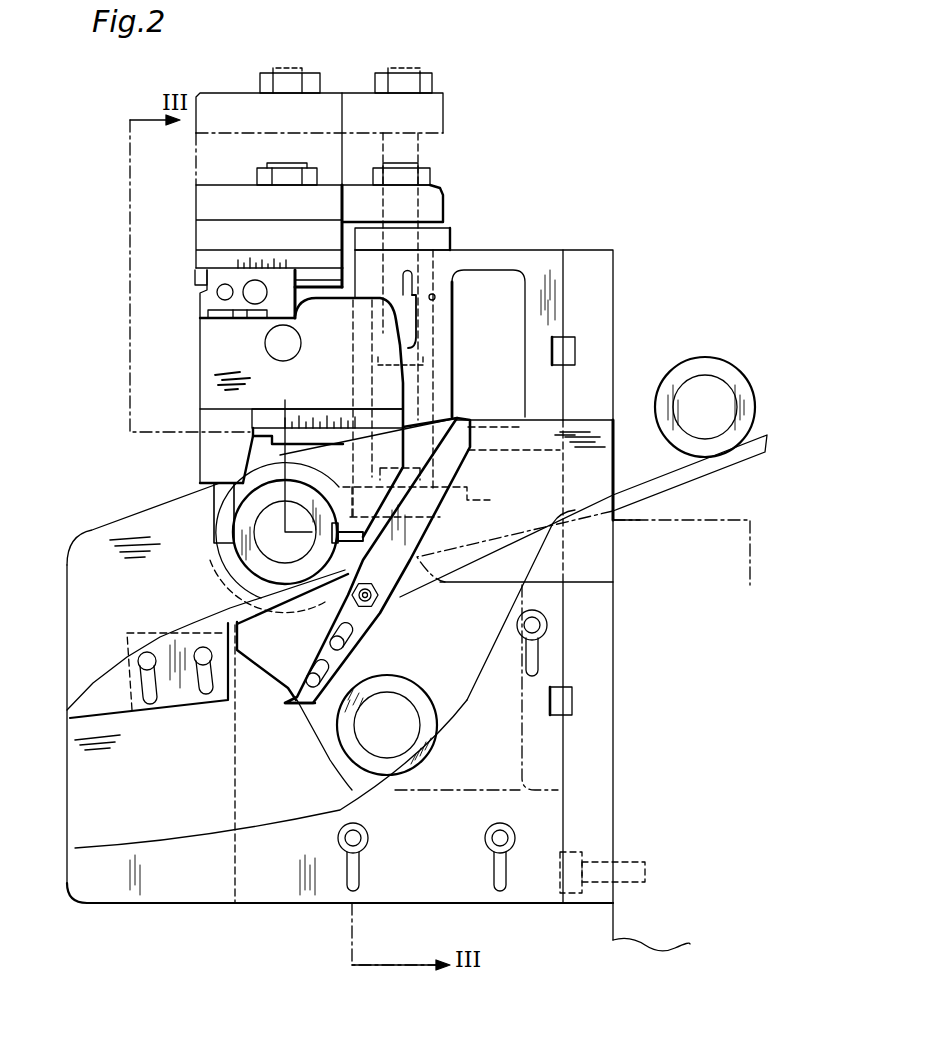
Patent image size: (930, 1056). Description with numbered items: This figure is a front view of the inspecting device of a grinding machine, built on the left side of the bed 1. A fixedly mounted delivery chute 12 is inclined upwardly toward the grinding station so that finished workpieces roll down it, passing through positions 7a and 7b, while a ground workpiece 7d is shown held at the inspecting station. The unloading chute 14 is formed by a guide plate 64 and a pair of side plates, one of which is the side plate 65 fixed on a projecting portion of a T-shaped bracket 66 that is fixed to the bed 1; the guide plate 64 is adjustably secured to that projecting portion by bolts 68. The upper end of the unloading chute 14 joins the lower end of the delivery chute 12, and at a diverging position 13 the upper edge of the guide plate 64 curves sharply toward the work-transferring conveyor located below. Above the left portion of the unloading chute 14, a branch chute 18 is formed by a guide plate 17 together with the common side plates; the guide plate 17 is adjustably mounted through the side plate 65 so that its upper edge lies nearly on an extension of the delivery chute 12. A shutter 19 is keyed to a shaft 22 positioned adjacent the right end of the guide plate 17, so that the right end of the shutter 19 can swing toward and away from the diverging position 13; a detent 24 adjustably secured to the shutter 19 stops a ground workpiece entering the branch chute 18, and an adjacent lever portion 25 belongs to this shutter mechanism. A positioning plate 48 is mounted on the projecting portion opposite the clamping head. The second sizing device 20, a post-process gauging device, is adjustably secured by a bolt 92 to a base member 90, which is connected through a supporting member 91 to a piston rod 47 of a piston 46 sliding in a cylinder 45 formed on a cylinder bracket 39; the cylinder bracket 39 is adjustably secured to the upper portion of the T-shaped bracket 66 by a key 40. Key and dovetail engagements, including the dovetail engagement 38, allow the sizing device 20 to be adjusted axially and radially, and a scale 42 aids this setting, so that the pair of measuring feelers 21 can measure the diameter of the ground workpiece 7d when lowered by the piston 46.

The bed 1 is at (630, 927).
The workpiece position 7a is at (703, 373).
The workpiece position 7b is at (398, 762).
The ground workpiece 7d is at (230, 562).
The delivery chute 12 is at (717, 468).
The diverging position 13 is at (548, 532).
The unloading chute 14 is at (85, 830).
The guide plate 17 is at (95, 708).
The branch chute 18 is at (92, 645).
The shutter 19 is at (463, 473).
The second sizing device 20 is at (217, 350).
The measuring feelers 21 is at (220, 520).
The shaft 22 is at (362, 582).
The detent 24 is at (260, 673).
The lever end 25 is at (298, 697).
The dovetail engagement 38 is at (188, 273).
The cylinder bracket 39 is at (537, 263).
The key 40 is at (567, 347).
The scale 42 is at (318, 423).
The cylinder 45 is at (435, 297).
The piston 46 is at (422, 390).
The piston rod 47 is at (410, 263).
The positioning plate 48 is at (250, 478).
The guide plate 64 is at (103, 878).
The side plate 65 is at (75, 785).
The T-shaped bracket 66 is at (593, 780).
The bolts 68 is at (538, 623).
The base member 90 is at (203, 233).
The supporting member 91 is at (440, 193).
The bolt 92 is at (200, 296).